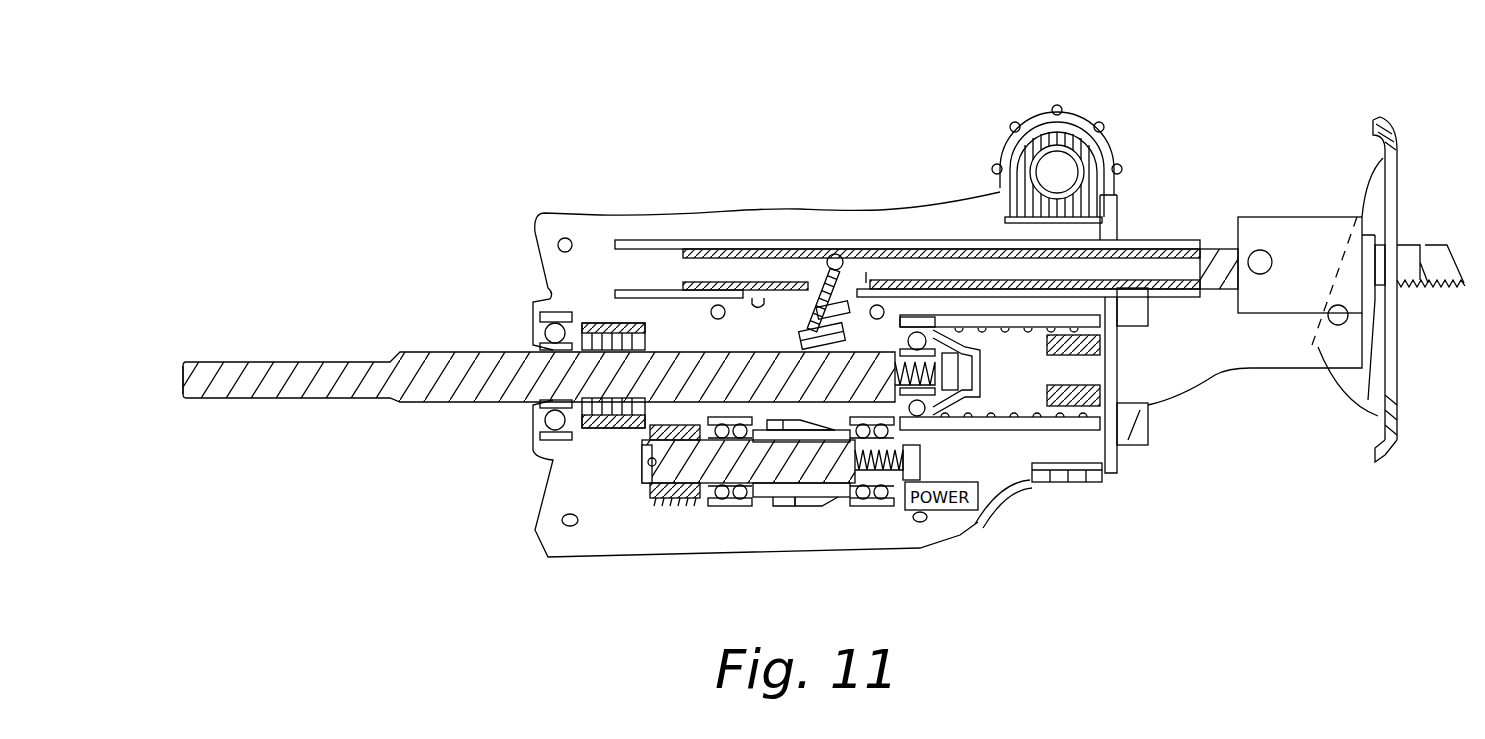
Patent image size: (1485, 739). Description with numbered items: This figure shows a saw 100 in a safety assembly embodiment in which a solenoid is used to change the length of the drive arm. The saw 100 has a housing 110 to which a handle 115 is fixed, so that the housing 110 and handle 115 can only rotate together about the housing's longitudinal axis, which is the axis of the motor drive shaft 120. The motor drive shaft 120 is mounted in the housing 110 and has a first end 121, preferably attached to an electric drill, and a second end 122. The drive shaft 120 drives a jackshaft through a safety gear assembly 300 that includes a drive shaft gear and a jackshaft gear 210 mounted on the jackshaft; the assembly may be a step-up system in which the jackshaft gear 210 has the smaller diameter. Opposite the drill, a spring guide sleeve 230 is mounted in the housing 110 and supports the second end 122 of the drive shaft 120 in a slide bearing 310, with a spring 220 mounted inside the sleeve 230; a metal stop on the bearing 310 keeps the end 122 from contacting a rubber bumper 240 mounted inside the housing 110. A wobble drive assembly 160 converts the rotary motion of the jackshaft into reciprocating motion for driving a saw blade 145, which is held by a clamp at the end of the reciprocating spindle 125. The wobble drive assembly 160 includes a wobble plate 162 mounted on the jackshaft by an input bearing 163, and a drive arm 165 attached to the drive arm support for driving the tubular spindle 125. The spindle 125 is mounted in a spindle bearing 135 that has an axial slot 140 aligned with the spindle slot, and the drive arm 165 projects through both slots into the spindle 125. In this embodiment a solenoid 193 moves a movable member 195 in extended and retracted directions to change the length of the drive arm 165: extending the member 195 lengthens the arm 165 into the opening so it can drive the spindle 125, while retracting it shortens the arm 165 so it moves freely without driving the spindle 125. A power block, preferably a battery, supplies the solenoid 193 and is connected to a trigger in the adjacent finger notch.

The saw 100 is at (912, 143).
The housing 110 is at (562, 212).
The handle 115 is at (1085, 130).
The motor drive shaft 120 is at (262, 365).
The first end 121 is at (183, 383).
The second end 122 is at (985, 350).
The reciprocating spindle 125 is at (1162, 243).
The spindle bearing 135 is at (640, 243).
The axial slot 140 is at (770, 290).
The saw blade 145 is at (1450, 262).
The wobble drive assembly 160 is at (775, 418).
The wobble plate 162 is at (815, 502).
The input bearing 163 is at (780, 500).
The drive arm 165 is at (712, 320).
The solenoid 193 is at (858, 305).
The movable member 195 is at (845, 265).
The jackshaft gear 210 is at (650, 490).
The spring 220 is at (945, 430).
The spring guide sleeve 230 is at (1077, 432).
The rubber bumper 240 is at (1047, 385).
The safety gear assembly 300 is at (618, 478).
The slide bearing 310 is at (985, 255).